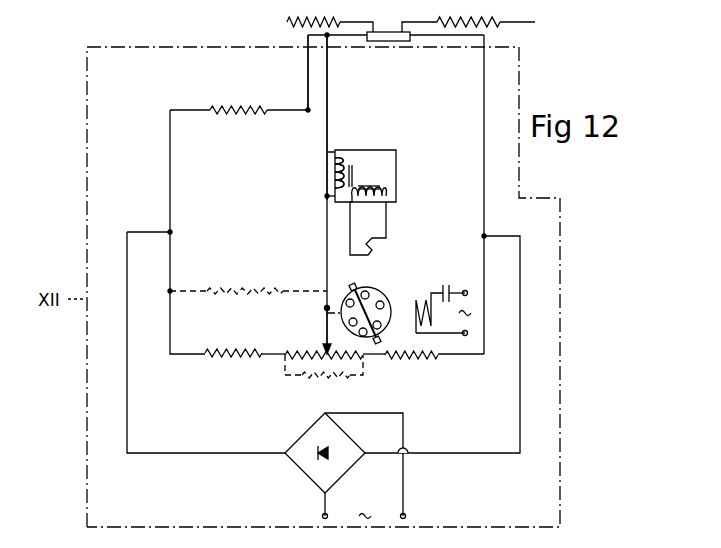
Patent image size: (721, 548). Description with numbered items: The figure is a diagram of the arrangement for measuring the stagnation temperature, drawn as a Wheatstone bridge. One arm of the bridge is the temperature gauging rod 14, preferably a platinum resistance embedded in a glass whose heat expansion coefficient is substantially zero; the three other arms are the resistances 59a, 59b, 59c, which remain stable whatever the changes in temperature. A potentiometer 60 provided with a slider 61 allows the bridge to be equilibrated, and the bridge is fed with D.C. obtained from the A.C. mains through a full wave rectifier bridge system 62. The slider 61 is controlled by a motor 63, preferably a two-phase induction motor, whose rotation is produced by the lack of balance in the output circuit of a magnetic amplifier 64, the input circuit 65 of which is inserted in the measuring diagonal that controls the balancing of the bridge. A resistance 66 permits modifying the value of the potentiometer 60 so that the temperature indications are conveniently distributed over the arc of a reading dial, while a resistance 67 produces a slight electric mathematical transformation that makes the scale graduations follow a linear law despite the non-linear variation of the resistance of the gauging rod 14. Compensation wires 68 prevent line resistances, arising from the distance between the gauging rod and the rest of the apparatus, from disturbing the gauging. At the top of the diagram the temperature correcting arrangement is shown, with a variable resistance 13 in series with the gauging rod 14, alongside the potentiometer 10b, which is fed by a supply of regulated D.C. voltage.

The potentiometer 10b is at (287, 22).
The variable resistance 13 is at (500, 22).
The temperature gauging rod 14 is at (388, 42).
The compensation wires 68 is at (307, 74).
The resistance 59a is at (229, 106).
The magnetic amplifier 64 is at (376, 158).
The input circuit 65 is at (334, 171).
The resistance 67 is at (235, 290).
The motor 63 is at (376, 299).
The slider 61 is at (325, 330).
The resistance 59b is at (235, 349).
The potentiometer 60 is at (303, 349).
The resistance 66 is at (350, 377).
The resistance 59c is at (415, 362).
The full wave rectifier bridge system 62 is at (317, 433).